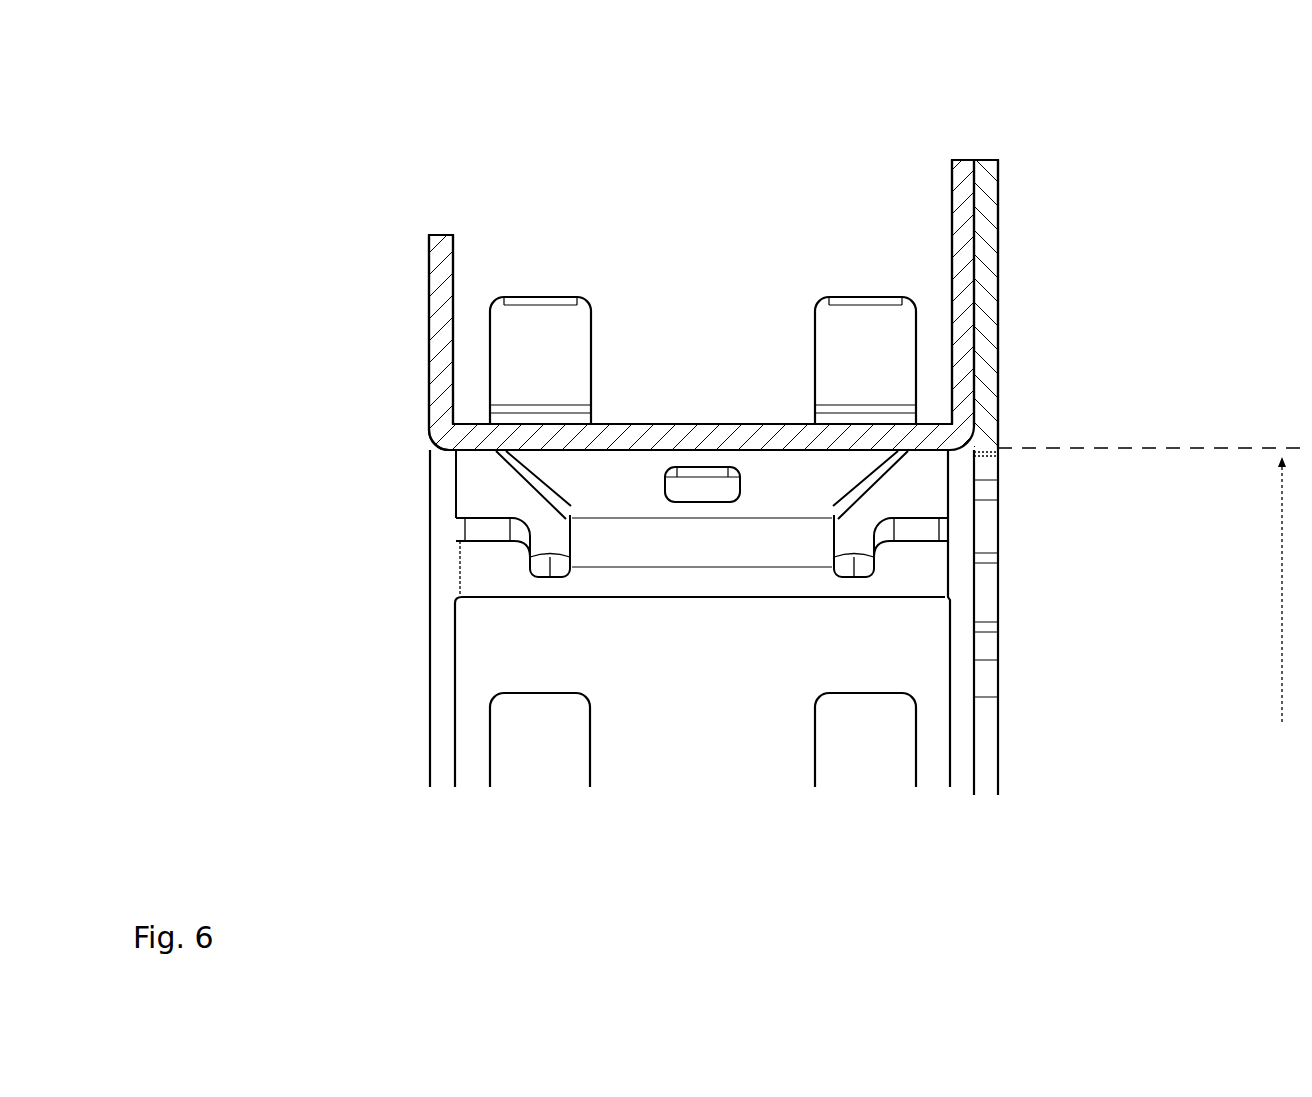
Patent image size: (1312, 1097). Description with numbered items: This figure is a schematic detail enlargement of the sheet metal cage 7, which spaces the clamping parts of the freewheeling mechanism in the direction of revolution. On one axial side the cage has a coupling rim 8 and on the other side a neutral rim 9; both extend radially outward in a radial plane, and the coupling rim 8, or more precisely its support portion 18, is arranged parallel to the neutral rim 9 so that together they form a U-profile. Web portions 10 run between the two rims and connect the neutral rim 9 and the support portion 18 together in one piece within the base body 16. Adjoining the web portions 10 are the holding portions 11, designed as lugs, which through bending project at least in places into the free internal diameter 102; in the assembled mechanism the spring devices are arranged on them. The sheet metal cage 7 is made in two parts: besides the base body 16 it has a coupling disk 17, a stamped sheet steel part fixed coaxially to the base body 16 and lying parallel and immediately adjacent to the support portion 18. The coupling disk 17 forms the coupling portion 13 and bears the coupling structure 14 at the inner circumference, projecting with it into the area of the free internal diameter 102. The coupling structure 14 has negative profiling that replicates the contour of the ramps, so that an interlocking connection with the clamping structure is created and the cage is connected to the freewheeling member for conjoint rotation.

The sheet metal cage 7 is at (280, 271).
The coupling rim 8 is at (976, 128).
The neutral rim 9 is at (438, 265).
The web portions 10 is at (620, 433).
The holding portions 11 is at (573, 297).
The coupling portion 13 is at (998, 348).
The coupling structure 14 is at (983, 466).
The base body 16 is at (442, 388).
The coupling disk 17 is at (996, 250).
The support portion 18 is at (960, 274).
The free internal diameter 102 is at (1151, 585).